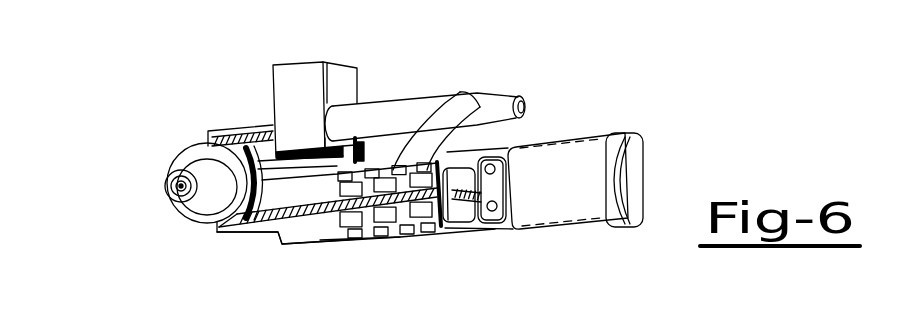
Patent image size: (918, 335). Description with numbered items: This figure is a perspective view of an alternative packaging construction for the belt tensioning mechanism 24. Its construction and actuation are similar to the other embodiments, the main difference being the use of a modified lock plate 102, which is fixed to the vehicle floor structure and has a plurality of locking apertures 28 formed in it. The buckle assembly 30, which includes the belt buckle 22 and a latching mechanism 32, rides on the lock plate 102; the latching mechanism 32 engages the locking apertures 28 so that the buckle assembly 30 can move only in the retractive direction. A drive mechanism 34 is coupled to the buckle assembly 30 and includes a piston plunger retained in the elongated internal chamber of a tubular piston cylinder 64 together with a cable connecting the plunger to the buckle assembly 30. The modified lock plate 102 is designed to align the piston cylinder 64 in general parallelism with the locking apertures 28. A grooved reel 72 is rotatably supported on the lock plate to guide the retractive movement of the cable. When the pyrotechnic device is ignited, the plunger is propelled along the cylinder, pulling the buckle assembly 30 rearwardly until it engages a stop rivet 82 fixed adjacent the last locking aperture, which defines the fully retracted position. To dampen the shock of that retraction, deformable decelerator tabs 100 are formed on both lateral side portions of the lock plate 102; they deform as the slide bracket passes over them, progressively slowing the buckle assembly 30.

The belt buckle 22 is at (590, 150).
The belt tensioning mechanism 24 is at (603, 107).
The locking apertures 28 is at (436, 119).
The buckle assembly 30 is at (577, 94).
The latching mechanism 32 is at (236, 120).
The drive mechanism 34 is at (308, 62).
The piston cylinder 64 is at (408, 110).
The grooved reel 72 is at (213, 223).
The stop rivet 82 is at (322, 230).
The deceleration tabs 100 is at (480, 107).
The lock plate 102 is at (306, 232).